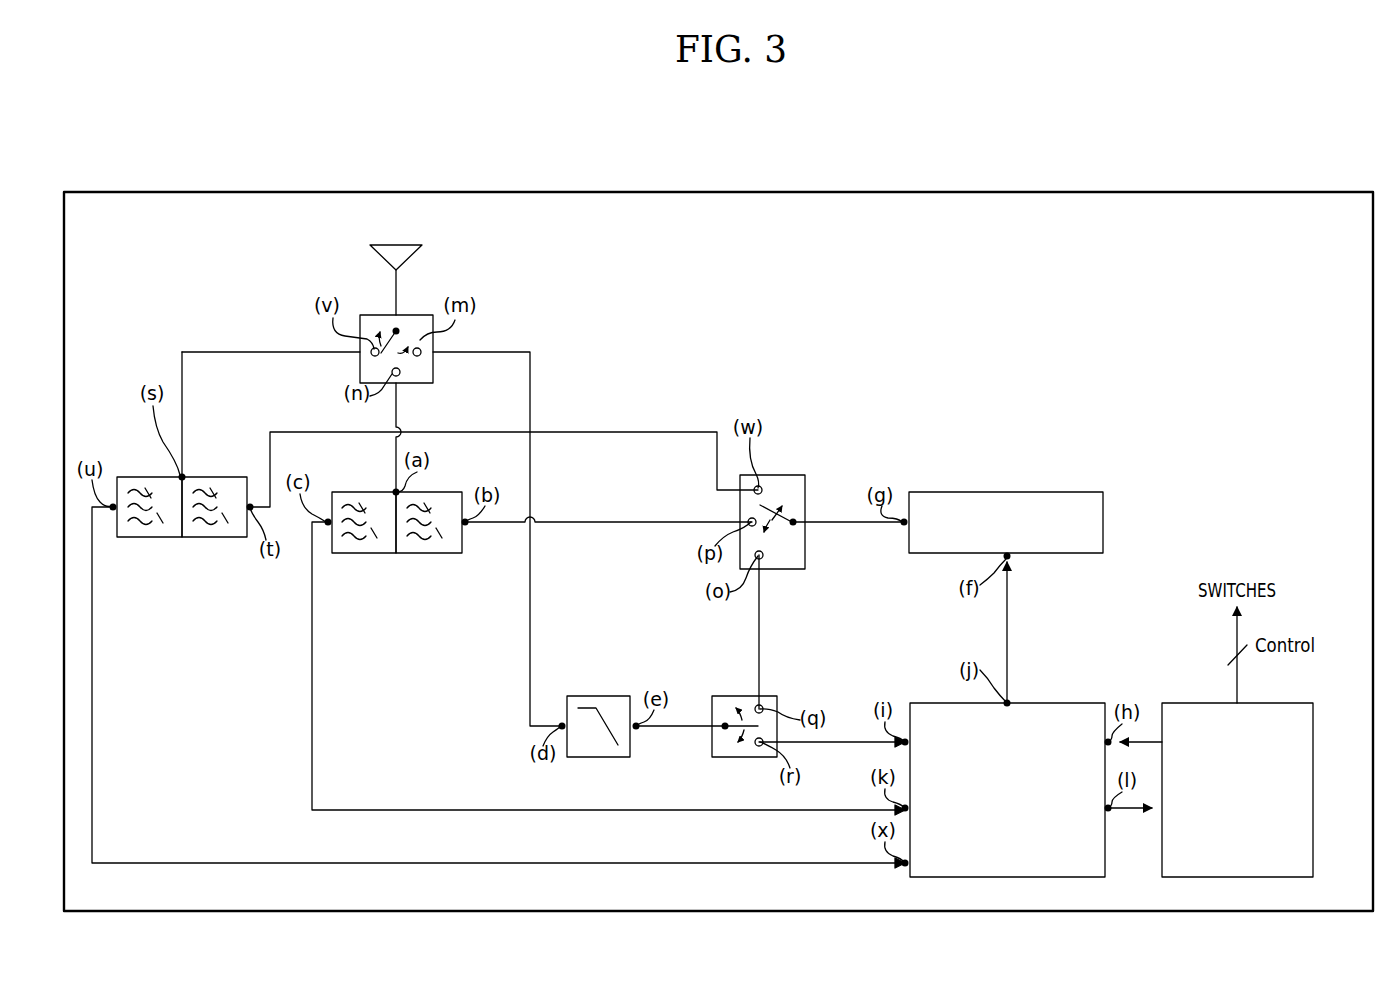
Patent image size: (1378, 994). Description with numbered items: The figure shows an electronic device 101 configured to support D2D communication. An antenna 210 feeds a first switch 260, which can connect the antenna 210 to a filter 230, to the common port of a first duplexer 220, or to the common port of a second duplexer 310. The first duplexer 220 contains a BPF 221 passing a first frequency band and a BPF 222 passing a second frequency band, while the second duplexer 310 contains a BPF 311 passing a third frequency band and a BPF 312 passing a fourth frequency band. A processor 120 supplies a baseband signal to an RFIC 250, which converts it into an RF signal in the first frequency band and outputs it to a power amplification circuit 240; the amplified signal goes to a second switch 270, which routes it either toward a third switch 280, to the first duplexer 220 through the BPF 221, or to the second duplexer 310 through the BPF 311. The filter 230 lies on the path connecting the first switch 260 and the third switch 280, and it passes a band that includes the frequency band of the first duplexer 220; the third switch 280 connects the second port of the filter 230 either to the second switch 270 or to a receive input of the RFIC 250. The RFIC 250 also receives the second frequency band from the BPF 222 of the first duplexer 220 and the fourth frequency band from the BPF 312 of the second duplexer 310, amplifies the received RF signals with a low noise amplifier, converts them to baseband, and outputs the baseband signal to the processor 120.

The electronic device 101 is at (780, 192).
The antenna 210 is at (402, 245).
The first switch 260 is at (408, 315).
The second duplexer 310 is at (187, 549).
The BPF 311 is at (205, 477).
The BPF 312 is at (159, 477).
The first duplexer 220 is at (412, 556).
The BPF 221 is at (442, 492).
The BPF 222 is at (344, 492).
The second switch 270 is at (780, 475).
The power amplification circuit 240 is at (1025, 492).
The filter 230 is at (598, 696).
The third switch 280 is at (770, 696).
The RFIC 250 is at (1060, 703).
The processor 120 is at (1313, 770).